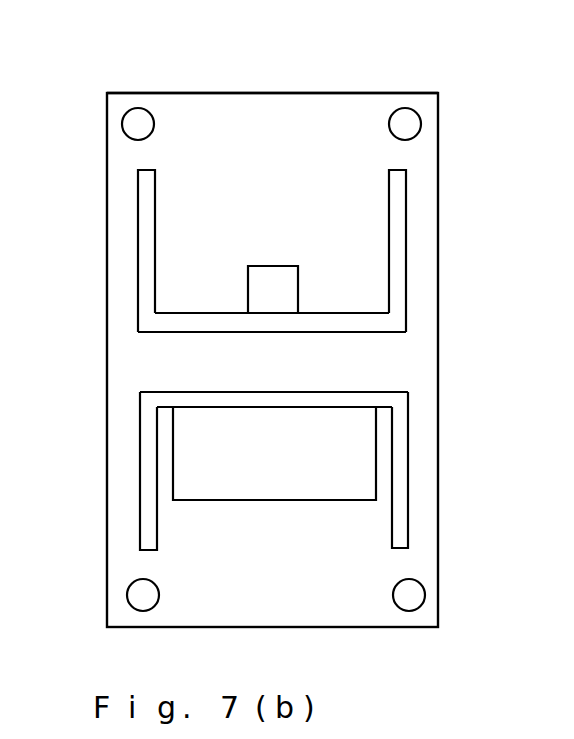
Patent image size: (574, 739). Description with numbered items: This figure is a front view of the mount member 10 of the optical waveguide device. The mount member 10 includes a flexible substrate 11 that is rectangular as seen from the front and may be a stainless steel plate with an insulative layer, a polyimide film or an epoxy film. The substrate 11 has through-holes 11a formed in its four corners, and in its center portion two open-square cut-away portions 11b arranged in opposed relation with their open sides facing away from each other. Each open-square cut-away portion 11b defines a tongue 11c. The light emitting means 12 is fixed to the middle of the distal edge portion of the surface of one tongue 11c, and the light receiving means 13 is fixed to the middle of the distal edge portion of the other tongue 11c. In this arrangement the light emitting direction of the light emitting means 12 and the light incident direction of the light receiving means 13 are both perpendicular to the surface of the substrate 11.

The mount member 10 is at (192, 91).
The flexible substrate 11 is at (423, 358).
The through-holes 11a is at (137, 108).
The open-square cut-away portions 11b is at (383, 321).
The tongues 11c is at (393, 252).
The light emitting means 12 is at (282, 280).
The light receiving means 13 is at (347, 486).